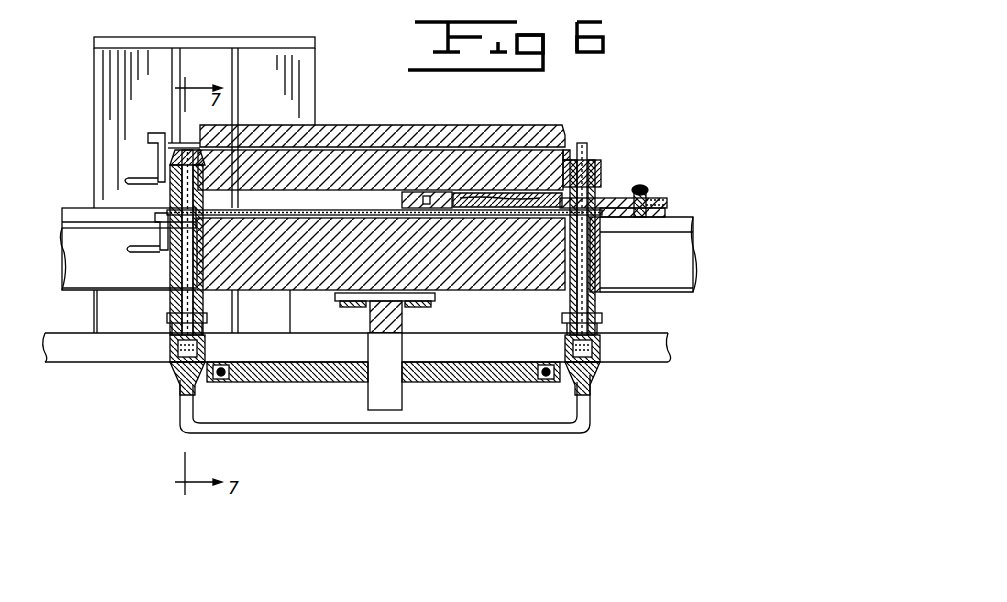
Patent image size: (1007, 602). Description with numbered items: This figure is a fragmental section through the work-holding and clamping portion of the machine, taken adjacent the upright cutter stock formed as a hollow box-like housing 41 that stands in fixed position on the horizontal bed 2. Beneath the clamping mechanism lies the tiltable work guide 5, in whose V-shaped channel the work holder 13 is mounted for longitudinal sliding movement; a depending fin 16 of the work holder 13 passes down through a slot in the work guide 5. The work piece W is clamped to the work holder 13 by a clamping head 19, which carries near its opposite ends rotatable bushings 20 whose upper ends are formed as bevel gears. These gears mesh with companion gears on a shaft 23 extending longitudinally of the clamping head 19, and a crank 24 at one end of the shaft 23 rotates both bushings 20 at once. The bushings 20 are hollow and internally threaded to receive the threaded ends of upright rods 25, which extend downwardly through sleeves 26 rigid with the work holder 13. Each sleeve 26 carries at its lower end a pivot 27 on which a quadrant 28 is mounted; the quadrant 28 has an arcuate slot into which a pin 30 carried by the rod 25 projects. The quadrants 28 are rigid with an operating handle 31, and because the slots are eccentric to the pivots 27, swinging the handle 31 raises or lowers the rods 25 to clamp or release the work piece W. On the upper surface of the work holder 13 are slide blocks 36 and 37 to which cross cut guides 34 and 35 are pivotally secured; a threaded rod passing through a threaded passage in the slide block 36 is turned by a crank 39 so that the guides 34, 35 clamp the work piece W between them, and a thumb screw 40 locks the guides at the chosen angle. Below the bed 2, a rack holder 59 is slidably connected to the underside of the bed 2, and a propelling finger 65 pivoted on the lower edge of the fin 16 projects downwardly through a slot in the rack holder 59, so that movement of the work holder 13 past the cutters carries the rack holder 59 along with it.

The horizontal bed 2 is at (72, 350).
The work guide 5 is at (62, 250).
The work holder 13 is at (62, 212).
The depending fin 16 is at (288, 300).
The clamping head 19 is at (535, 126).
The rotatable bushing 20 is at (587, 148).
The shaft 23 is at (355, 138).
The crank 24 is at (148, 160).
The upright rod 25 is at (182, 298).
The sleeve 26 is at (170, 262).
The pivot 27 is at (207, 322).
The quadrant 28 is at (175, 378).
The pin 30 is at (205, 345).
The operating handle 31 is at (452, 435).
The cross cut guide 34 is at (402, 205).
The cross cut guide 35 is at (605, 198).
The slide block 36 is at (447, 205).
The slide block 37 is at (622, 218).
The crank 39 is at (155, 233).
The thumb screw 40 is at (646, 186).
The hollow box-like housing 41 is at (94, 72).
The rack holder 59 is at (512, 382).
The propelling finger 65 is at (385, 371).
The work piece W is at (492, 193).